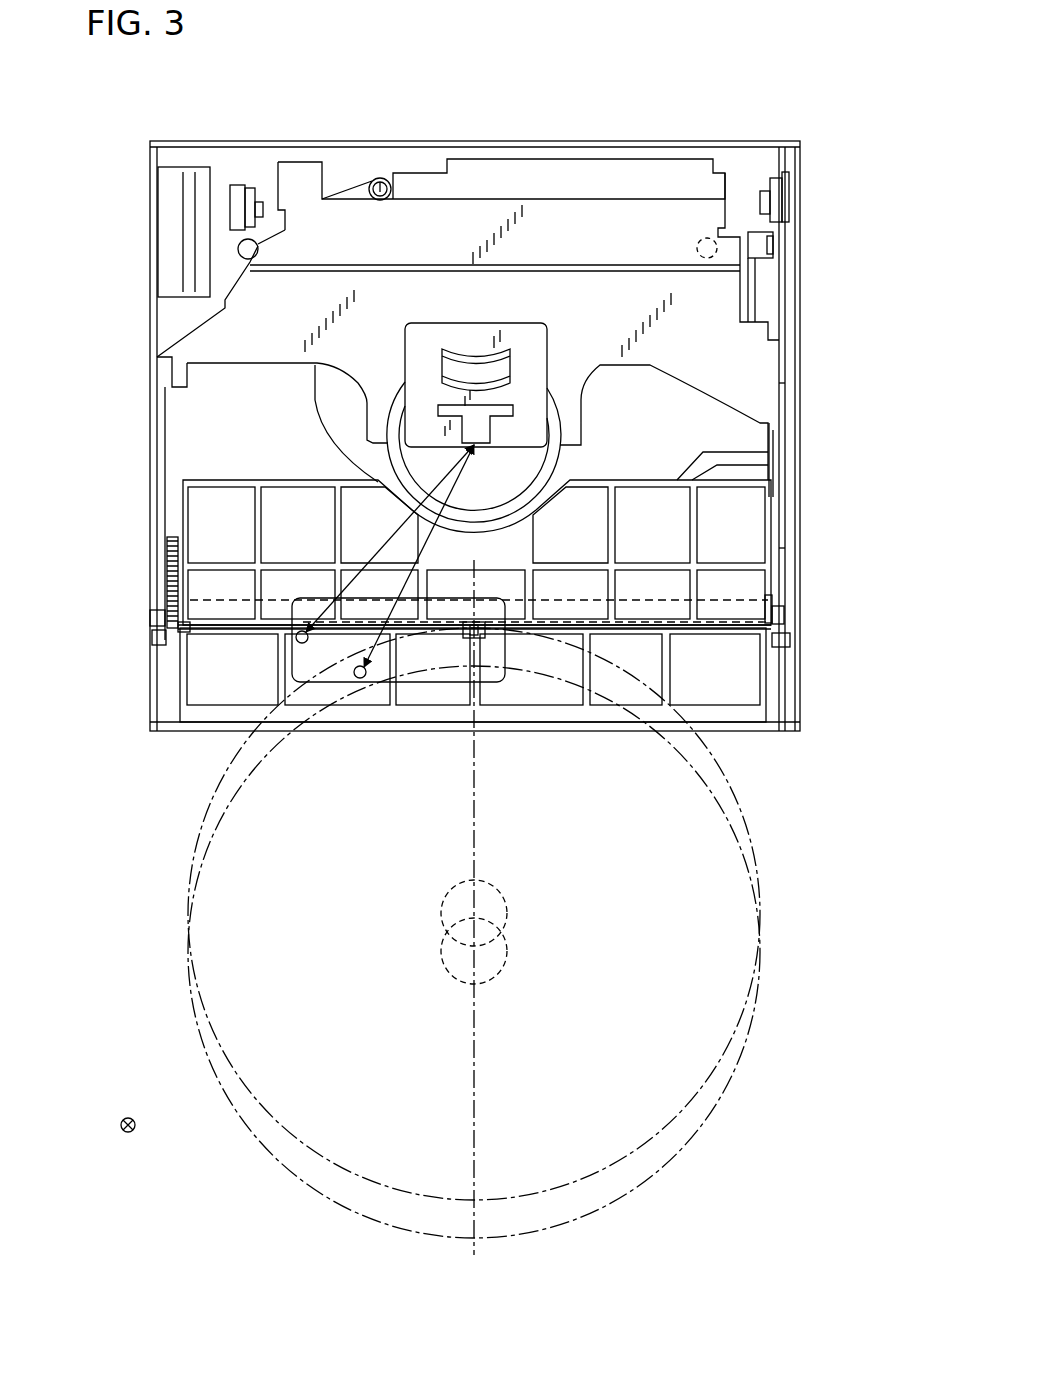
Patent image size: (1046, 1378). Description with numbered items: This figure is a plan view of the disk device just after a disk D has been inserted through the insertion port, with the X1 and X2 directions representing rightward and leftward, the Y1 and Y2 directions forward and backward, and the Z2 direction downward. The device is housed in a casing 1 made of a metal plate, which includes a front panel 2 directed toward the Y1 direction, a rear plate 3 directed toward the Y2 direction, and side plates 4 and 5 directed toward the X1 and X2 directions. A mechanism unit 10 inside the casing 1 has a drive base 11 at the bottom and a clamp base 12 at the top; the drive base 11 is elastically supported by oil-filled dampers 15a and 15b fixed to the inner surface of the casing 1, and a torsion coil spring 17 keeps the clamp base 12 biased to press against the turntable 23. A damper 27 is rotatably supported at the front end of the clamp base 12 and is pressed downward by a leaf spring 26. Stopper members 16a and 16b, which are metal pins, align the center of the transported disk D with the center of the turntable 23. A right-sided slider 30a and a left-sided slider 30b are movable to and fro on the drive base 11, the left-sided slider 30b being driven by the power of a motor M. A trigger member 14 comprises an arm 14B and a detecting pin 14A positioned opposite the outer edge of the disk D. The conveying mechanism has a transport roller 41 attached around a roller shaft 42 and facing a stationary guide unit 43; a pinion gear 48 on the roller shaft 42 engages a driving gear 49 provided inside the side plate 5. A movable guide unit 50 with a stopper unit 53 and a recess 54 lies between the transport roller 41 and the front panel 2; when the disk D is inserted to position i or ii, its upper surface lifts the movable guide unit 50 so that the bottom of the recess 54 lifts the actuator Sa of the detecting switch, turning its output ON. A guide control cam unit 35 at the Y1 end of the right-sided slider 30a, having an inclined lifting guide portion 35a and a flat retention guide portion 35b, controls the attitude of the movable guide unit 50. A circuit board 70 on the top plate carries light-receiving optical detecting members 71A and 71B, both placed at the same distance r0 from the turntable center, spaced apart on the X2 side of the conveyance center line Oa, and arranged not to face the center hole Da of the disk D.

The casing 1 is at (806, 337).
The front panel 2 is at (175, 732).
The top wall 3 is at (478, 141).
The side plate 4 is at (797, 382).
The side plate 5 is at (157, 373).
The mechanism unit 10 is at (532, 103).
The drive base 11 is at (571, 185).
The clamp base 12 is at (644, 219).
The trigger member 14 is at (405, 98).
The detecting pin 14A is at (380, 178).
The arm 14B is at (352, 190).
The damper 15a is at (775, 178).
The damper 15b is at (238, 185).
The stopper member 16a is at (705, 260).
The stopper member 16b is at (252, 262).
The torsion coil spring 17 is at (760, 244).
The turntable 23 is at (558, 456).
The leaf spring 26 is at (537, 343).
The damper 27 is at (486, 481).
The right-sided slider 30a is at (788, 433).
The left-sided slider 30b is at (157, 470).
The guide control cam unit 35 is at (78, 588).
The lifting guide portion 35a is at (172, 633).
The retention guide portion 35b is at (170, 603).
The transport roller 41 is at (222, 617).
The roller shaft 42 is at (767, 605).
The stationary guide unit 43 is at (742, 518).
The pinion gear 48 is at (184, 627).
The driving gear 49 is at (167, 556).
The movable guide unit 50 is at (745, 690).
The stopper unit 53 is at (578, 692).
The recess 54 is at (476, 640).
The circuit board 70 is at (492, 665).
The optical detecting member 71A is at (302, 645).
The optical detecting member 71B is at (360, 680).
The motor M is at (172, 237).
The disk D is at (751, 845).
The center hole Da is at (505, 912).
The conveyance center line Oa is at (477, 913).
The actuator Sa is at (477, 611).
The distance r0 is at (390, 556).
The position i is at (714, 1108).
The position ii is at (733, 790).
The X1 direction X1 is at (135, 1125).
The X2 direction X2 is at (121, 1125).
The Y1 direction Y1 is at (128, 1132).
The Y2 direction Y2 is at (128, 1118).
The Z2 direction Z2 is at (143, 1113).